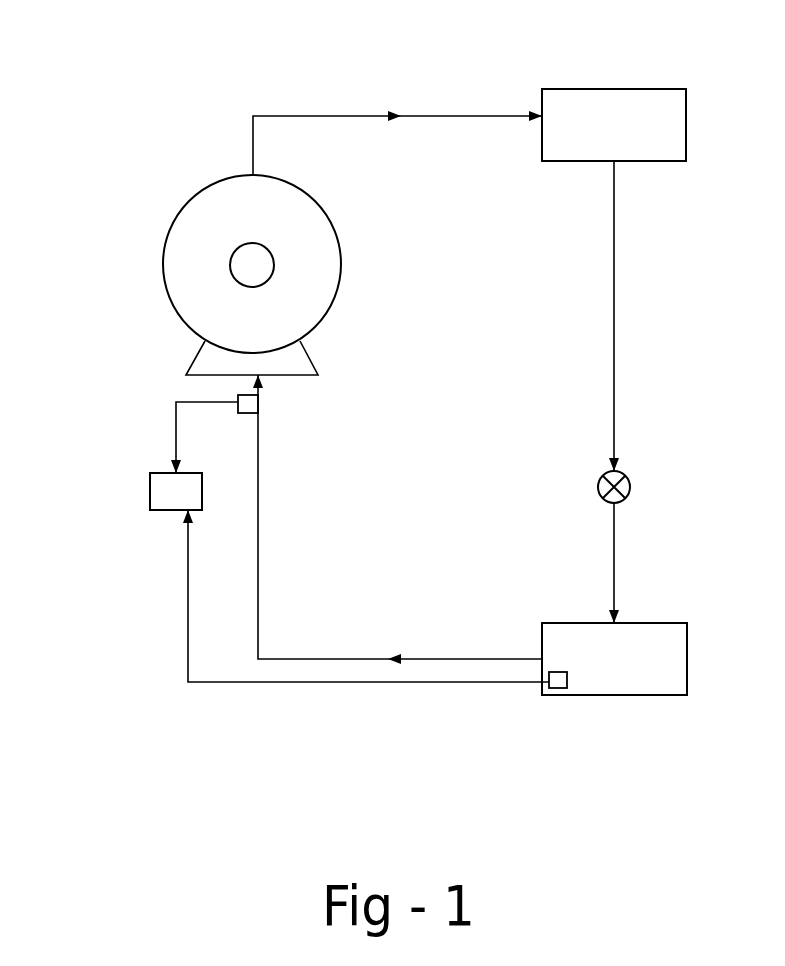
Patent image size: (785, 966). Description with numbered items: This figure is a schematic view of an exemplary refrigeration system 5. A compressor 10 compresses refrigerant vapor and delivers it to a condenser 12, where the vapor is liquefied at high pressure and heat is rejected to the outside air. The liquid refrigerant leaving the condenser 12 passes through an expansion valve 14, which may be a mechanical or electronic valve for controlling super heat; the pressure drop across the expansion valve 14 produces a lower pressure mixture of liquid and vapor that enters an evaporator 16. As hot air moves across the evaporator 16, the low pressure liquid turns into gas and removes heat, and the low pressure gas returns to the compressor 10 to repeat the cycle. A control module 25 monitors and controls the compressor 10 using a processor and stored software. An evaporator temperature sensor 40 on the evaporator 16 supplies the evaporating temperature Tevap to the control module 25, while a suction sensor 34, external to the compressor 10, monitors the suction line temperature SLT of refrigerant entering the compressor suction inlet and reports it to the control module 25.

The refrigeration system 5 is at (252, 62).
The compressor 10 is at (342, 258).
The condenser 12 is at (600, 89).
The expansion valve 14 is at (628, 477).
The evaporator 16 is at (656, 623).
The control module 25 is at (166, 511).
The suction sensor 34 is at (246, 414).
The evaporator temperature sensor 40 is at (563, 689).